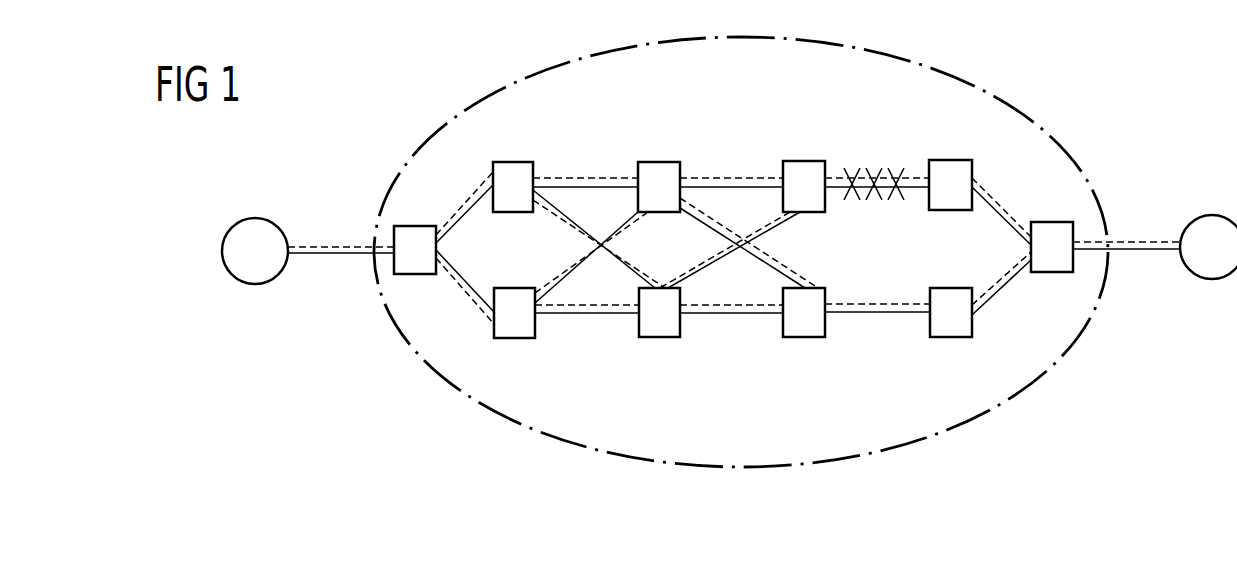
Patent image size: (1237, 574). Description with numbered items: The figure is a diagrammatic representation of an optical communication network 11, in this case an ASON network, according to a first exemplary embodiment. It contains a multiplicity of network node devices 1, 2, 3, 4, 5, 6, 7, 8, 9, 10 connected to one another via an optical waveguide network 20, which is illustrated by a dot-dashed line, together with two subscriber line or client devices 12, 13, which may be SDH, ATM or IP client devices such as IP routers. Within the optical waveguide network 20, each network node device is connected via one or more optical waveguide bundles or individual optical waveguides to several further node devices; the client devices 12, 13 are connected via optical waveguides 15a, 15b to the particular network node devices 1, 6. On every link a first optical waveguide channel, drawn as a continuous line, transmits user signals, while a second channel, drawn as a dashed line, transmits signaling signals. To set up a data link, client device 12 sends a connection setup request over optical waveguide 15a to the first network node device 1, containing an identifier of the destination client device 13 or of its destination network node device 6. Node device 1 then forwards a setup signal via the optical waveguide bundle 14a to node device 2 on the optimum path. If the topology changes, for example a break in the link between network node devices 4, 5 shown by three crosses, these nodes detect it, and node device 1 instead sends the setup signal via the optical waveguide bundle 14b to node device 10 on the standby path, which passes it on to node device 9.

The network node device 1 is at (413, 226).
The network node device 2 is at (513, 162).
The network node device 3 is at (660, 162).
The network node device 4 is at (802, 161).
The network node device 5 is at (948, 160).
The network node device 6 is at (1050, 222).
The network node device 7 is at (952, 337).
The network node device 8 is at (805, 337).
The network node device 9 is at (660, 337).
The network node device 10 is at (513, 338).
The optical communication network 11 is at (421, 415).
The client device 12 is at (253, 284).
The client device 13 is at (1213, 279).
The optical waveguide bundle 14a is at (464, 193).
The optical waveguide bundle 14b is at (459, 293).
The optical waveguide 15a is at (323, 230).
The optical waveguide 15b is at (1142, 227).
The optical waveguide network 20 is at (750, 465).